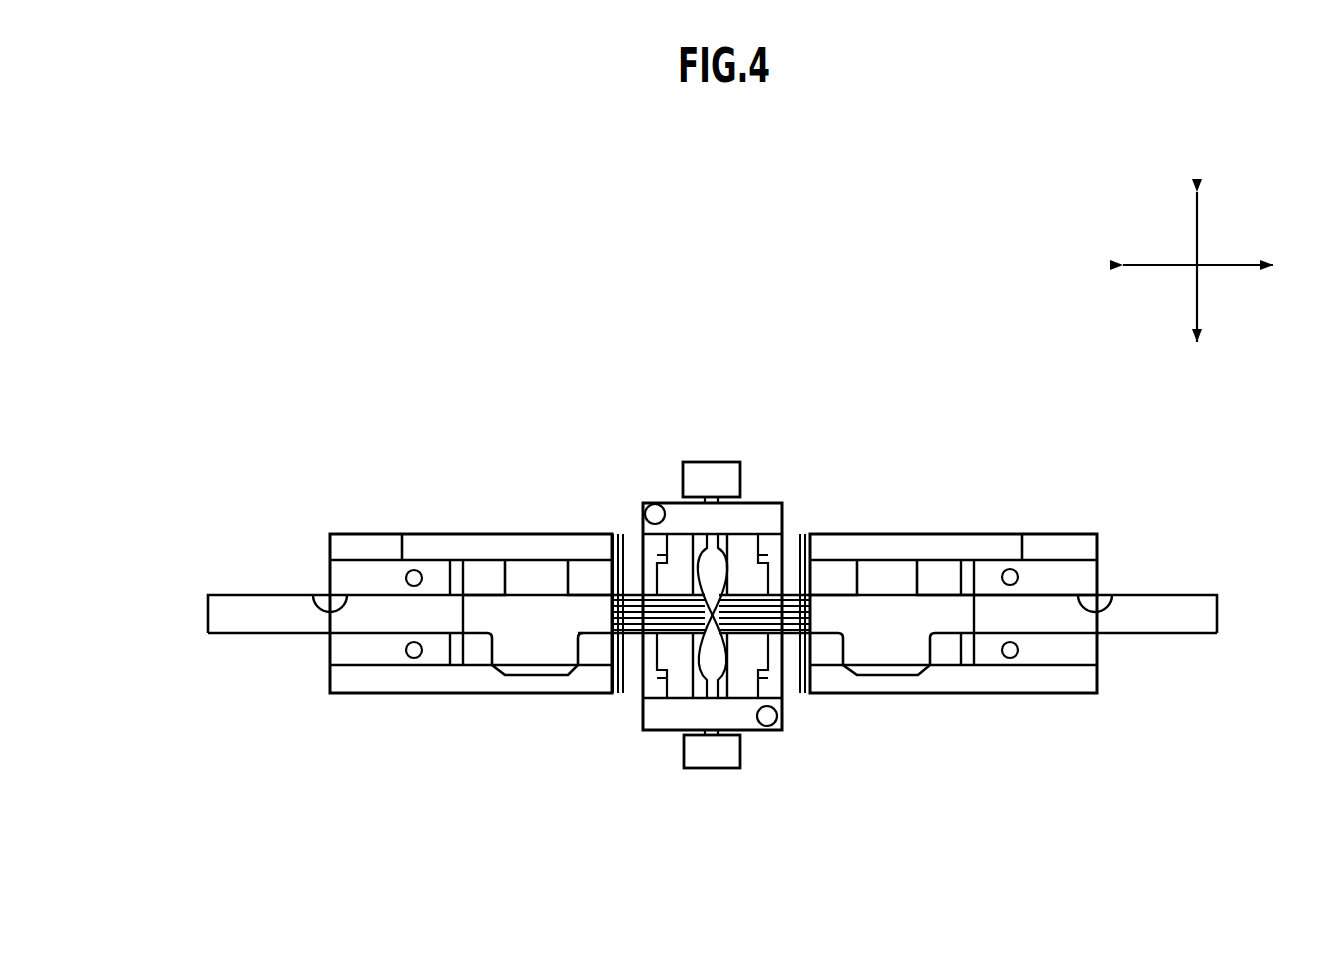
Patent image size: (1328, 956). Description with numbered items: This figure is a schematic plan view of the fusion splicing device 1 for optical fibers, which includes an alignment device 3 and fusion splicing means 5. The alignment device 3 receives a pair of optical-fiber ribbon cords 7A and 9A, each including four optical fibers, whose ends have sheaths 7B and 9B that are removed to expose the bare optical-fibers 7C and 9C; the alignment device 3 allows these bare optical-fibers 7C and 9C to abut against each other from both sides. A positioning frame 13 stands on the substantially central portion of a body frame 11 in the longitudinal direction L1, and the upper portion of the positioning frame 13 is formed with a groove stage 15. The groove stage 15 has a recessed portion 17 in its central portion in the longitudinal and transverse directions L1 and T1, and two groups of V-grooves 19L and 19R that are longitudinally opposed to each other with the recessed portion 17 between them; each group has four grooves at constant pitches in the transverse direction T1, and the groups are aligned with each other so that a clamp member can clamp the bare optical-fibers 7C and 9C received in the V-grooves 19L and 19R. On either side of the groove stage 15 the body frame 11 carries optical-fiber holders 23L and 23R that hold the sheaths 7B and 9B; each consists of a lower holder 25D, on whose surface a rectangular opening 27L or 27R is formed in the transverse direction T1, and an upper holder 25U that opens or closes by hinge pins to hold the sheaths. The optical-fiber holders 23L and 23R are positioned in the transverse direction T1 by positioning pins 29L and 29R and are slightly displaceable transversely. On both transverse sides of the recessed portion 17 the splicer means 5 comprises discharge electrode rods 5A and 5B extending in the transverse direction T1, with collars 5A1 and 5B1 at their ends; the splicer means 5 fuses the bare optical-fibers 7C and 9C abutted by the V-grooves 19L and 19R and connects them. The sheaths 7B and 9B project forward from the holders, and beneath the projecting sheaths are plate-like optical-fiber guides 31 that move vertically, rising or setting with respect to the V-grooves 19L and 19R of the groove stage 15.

The fusion splicing device 1 is at (823, 408).
The alignment device 3 is at (650, 475).
The fusion splicing means 5 is at (687, 622).
The discharge electrode rod 5A is at (708, 560).
The collar 5A1 is at (712, 475).
The discharge electrode rod 5B is at (700, 690).
The collar 5B1 is at (707, 758).
The optical-fiber ribbon cord 7A is at (262, 593).
The sheath 7B is at (260, 625).
The bare optical-fibers 7C is at (640, 590).
The optical-fiber ribbon cord 9A is at (1165, 593).
The sheath 9B is at (1153, 625).
The bare optical-fibers 9C is at (742, 590).
The body frame 11 is at (880, 693).
The positioning frame 13 is at (645, 707).
The groove stage 15 is at (742, 673).
The recessed portion 17 is at (722, 668).
The V-grooves 19L is at (677, 642).
The V-grooves 19R is at (748, 642).
The optical-fiber holder 23L is at (370, 668).
The optical-fiber holder 23R is at (1050, 668).
The upper holder 25U is at (530, 585).
The lower holder 25D is at (478, 650).
The rectangular opening 27L is at (312, 600).
The rectangular opening 27R is at (1100, 600).
The positioning pin 29L is at (414, 570).
The positioning pin 29R is at (1010, 569).
The optical-fiber guides 31 is at (622, 527).
The transverse direction T1 is at (1197, 247).
The longitudinal direction L1 is at (1214, 266).